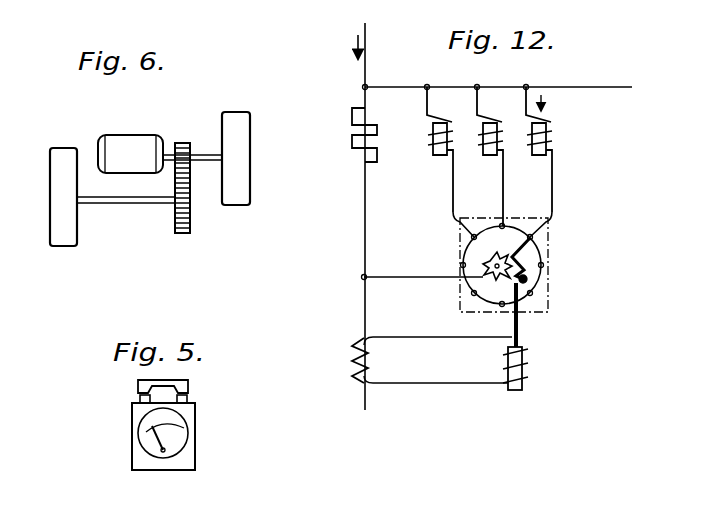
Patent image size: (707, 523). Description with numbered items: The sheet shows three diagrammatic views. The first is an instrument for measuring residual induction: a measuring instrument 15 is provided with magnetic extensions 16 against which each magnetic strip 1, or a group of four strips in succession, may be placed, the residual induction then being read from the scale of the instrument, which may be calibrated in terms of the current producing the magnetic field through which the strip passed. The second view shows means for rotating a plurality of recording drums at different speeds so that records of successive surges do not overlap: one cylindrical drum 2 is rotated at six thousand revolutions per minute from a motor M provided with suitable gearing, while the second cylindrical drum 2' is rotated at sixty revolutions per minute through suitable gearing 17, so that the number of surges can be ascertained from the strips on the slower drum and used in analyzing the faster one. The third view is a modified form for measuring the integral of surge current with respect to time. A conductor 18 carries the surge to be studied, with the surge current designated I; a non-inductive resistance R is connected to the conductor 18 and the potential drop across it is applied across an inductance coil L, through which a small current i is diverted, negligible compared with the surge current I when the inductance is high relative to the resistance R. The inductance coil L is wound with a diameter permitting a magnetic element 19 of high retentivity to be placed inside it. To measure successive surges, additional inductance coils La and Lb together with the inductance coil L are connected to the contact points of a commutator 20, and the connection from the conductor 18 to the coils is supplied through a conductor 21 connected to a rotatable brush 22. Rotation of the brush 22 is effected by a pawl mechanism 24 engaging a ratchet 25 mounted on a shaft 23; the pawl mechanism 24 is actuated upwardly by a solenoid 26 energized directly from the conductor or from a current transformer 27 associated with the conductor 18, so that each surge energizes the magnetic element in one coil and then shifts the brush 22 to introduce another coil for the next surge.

In FIG. 5, the magnetic strip 1 is at (193, 386).
In FIG. 6, the cylindrical drum 2 is at (250, 158).
In FIG. 6, the cylindrical drum 2' is at (46, 197).
In FIG. 5, the measuring instrument 15 is at (195, 444).
In FIG. 5, the magnetic extensions 16 is at (140, 400).
In FIG. 6, the gearing 17 is at (190, 212).
In FIG. 12, the conductor 18 is at (365, 48).
In FIG. 12, the magnetic element 19 is at (502, 203).
In FIG. 12, the commutator 20 is at (542, 255).
In FIG. 12, the conductor 21 is at (423, 270).
In FIG. 12, the rotatable brush 22 is at (527, 250).
In FIG. 12, the shaft 23 is at (490, 264).
In FIG. 12, the pawl mechanism 24 is at (537, 286).
In FIG. 12, the ratchet 25 is at (496, 242).
In FIG. 12, the solenoid 26 is at (527, 360).
In FIG. 12, the current transformer 27 is at (378, 364).
In FIG. 6, the motor M is at (133, 128).
In FIG. 12, the non-inductive resistance R is at (377, 132).
In FIG. 12, the inductance coil La is at (450, 149).
In FIG. 12, the inductance coil Lb is at (500, 156).
In FIG. 12, the inductance coil L is at (548, 138).
In FIG. 12, the surge current I is at (347, 46).
In FIG. 12, the current diverted through the inductance coil i is at (550, 105).